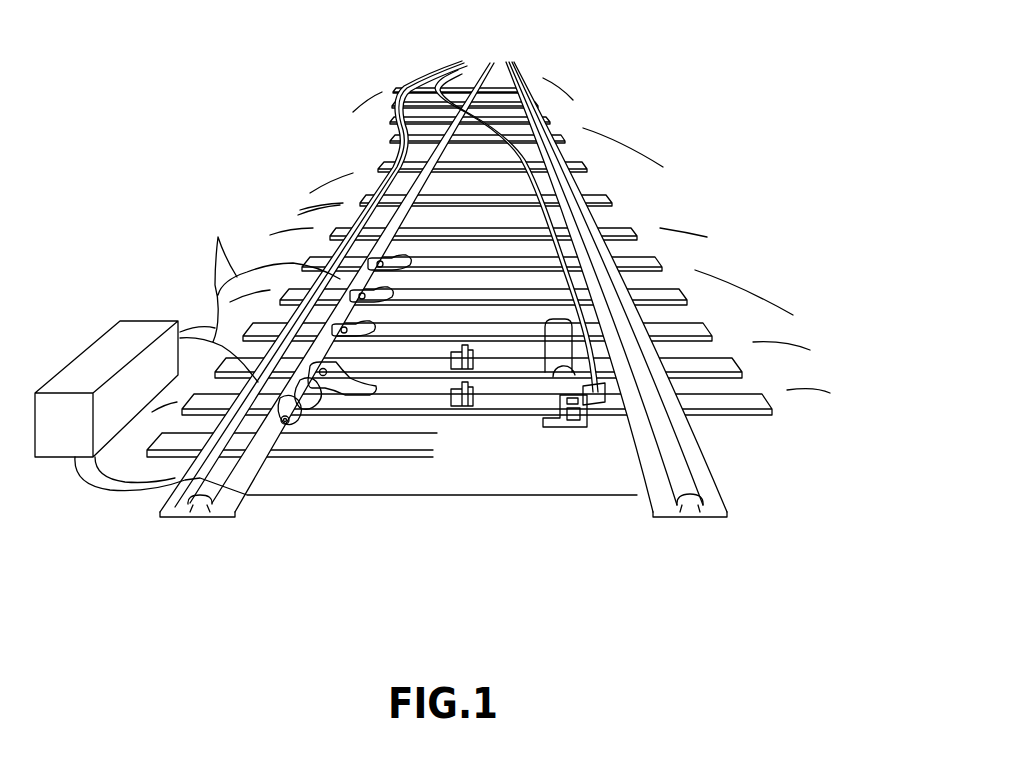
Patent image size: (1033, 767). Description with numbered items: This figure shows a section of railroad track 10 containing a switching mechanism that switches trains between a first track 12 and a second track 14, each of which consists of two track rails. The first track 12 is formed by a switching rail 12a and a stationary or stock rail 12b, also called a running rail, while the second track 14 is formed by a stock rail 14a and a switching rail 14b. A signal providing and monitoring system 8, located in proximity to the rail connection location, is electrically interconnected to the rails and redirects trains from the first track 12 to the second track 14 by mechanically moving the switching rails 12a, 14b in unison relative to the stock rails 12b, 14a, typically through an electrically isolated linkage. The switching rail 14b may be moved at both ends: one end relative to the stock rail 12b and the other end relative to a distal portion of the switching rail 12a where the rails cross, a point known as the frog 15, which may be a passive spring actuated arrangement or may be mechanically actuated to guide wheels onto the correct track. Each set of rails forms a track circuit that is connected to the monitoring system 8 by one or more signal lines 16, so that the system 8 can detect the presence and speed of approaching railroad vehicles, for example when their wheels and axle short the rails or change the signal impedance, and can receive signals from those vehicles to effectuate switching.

The signal providing and monitoring system 8 is at (142, 328).
The section of railroad track 10 is at (106, 344).
The first track 12 is at (465, 290).
The switching rail 12a is at (297, 290).
The stock rail 12b is at (687, 477).
The second track 14 is at (283, 290).
The stock rail 14a is at (180, 484).
The switching rail 14b is at (557, 217).
The frog 15 is at (540, 98).
The signal lines 16 is at (503, 522).